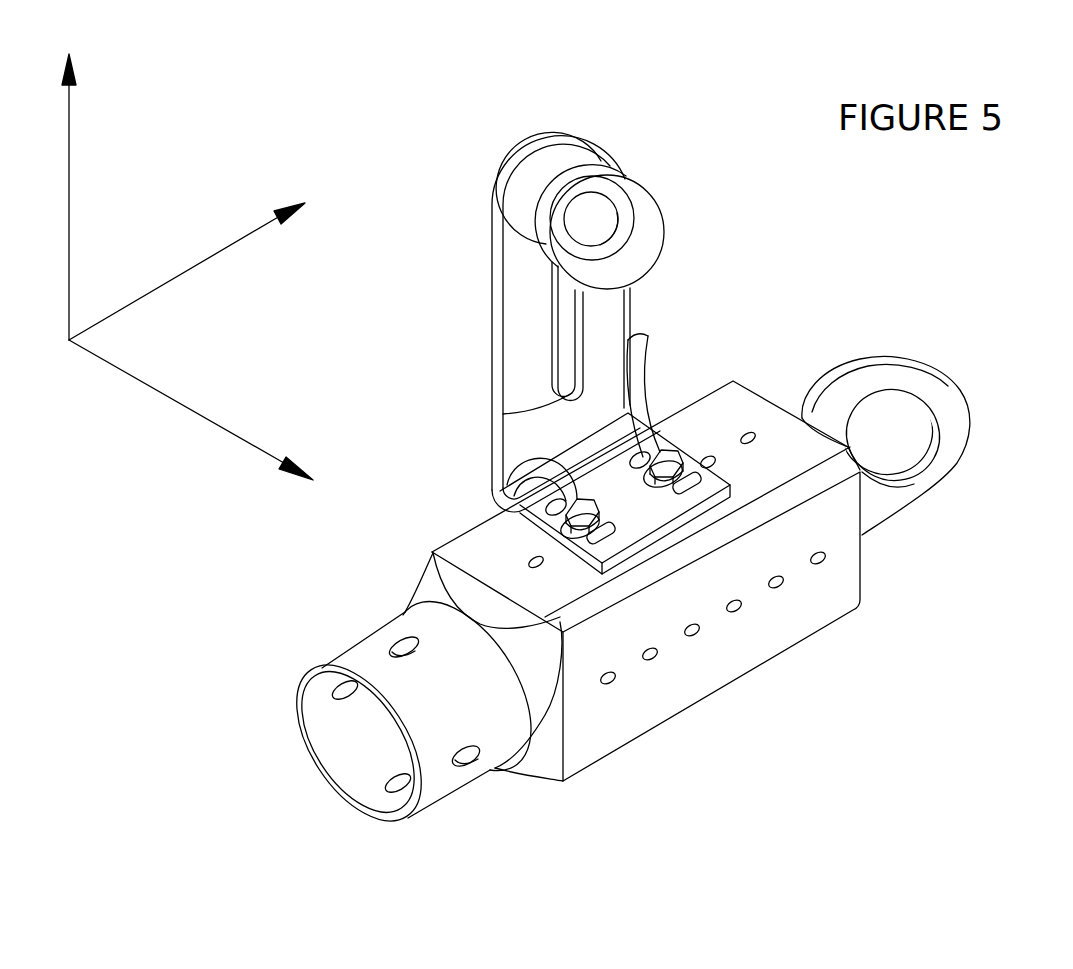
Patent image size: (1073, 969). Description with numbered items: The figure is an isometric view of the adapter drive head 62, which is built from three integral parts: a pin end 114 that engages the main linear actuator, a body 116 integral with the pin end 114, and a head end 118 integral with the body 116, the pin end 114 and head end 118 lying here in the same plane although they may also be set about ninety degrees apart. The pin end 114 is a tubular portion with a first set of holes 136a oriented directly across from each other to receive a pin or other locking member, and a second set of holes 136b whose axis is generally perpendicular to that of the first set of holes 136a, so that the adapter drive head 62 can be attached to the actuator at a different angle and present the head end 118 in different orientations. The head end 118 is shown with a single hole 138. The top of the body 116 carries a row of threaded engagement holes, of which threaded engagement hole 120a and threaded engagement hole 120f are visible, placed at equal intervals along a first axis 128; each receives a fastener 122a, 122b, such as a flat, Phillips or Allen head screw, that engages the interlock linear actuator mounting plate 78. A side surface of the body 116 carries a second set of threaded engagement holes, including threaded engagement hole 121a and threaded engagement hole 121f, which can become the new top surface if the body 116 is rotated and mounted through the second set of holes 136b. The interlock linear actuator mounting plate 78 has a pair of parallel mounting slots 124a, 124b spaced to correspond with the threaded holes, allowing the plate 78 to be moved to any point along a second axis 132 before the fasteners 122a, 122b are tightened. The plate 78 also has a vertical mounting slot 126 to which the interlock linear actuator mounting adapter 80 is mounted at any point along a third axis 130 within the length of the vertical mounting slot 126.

The adapter drive head 62 is at (878, 696).
The interlock linear actuator mounting plate 78 is at (497, 350).
The interlock linear actuator mounting adapter 80 is at (647, 220).
The pin end 114 is at (433, 805).
The body 116 is at (705, 700).
The head end 118 is at (947, 373).
The threaded engagement hole 120a is at (536, 556).
The threaded engagement hole 120f is at (748, 432).
The second set threaded engagement hole 121a is at (608, 686).
The second set threaded engagement hole 121f is at (818, 565).
The fastener 122a is at (557, 503).
The fastener 122b is at (660, 445).
The mounting slot 124a is at (577, 505).
The mounting slot 124b is at (648, 336).
The vertical mounting slot 126 is at (503, 414).
The first axis 128 is at (175, 278).
The third axis 130 is at (69, 190).
The second axis 132 is at (187, 409).
The first set of holes 136a is at (398, 775).
The second set of holes 136b is at (347, 695).
The hole 138 is at (941, 445).